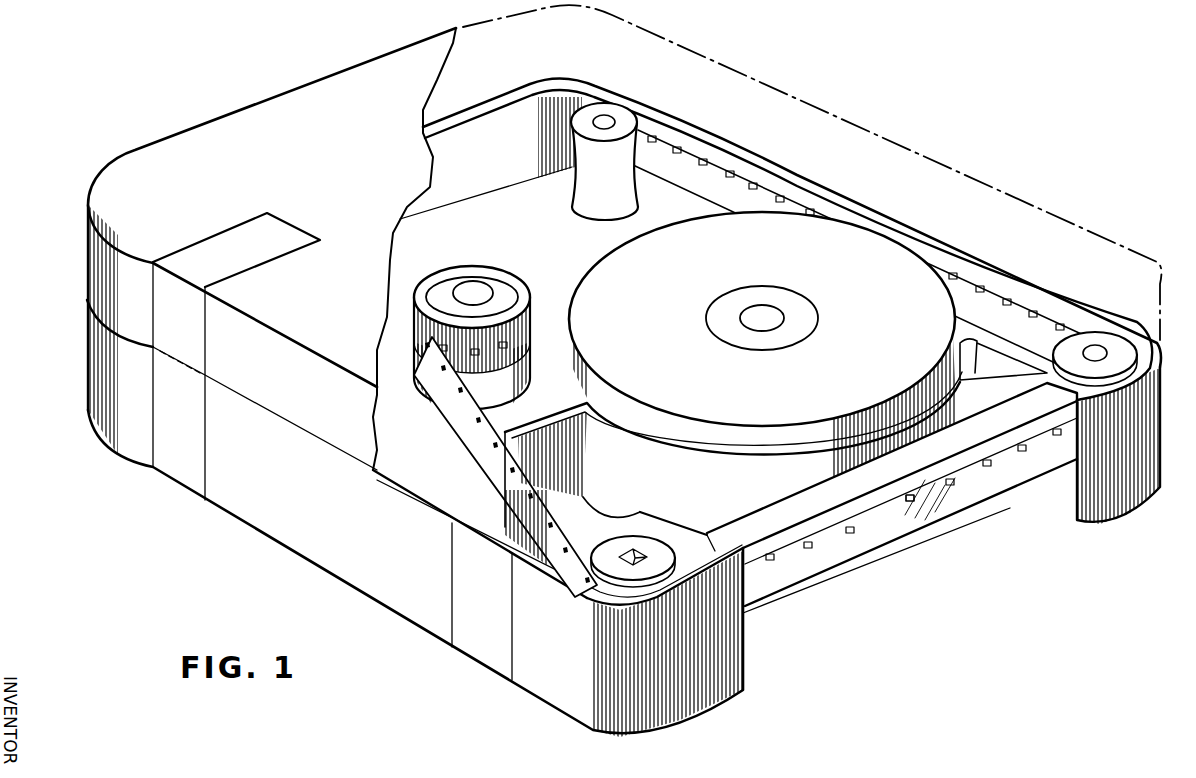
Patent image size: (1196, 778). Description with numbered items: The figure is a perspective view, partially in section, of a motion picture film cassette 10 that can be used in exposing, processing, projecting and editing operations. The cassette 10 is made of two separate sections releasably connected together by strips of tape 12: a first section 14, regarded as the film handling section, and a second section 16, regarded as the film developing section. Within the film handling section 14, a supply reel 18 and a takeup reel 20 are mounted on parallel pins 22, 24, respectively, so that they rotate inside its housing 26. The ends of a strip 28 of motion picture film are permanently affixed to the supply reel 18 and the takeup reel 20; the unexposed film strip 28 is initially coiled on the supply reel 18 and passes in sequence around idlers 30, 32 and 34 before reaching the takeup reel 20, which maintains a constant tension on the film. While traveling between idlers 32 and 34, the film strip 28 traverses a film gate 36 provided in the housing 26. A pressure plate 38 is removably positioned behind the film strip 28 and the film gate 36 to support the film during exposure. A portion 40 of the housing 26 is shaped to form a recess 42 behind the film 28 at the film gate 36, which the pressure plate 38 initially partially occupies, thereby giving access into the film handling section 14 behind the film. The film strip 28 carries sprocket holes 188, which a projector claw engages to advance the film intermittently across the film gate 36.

The motion picture film cassette 10 is at (190, 109).
The strips of tape 12 is at (243, 259).
The first section (film handling section) 14 is at (276, 545).
The second section (film developing section) 16 is at (302, 85).
The supply reel 18 is at (768, 293).
The takeup reel 20 is at (472, 275).
The pin 22 is at (750, 310).
The pin 24 is at (490, 291).
The housing 26 is at (958, 250).
The film strip 28 is at (888, 339).
The idler 30 is at (611, 188).
The idler 32 is at (1112, 350).
The idler 34 is at (611, 573).
The film gate 36 is at (770, 625).
The pressure plate 38 is at (1018, 413).
The portion of the housing 40 is at (536, 426).
The recess 42 is at (750, 498).
The sprocket holes 188 is at (953, 500).